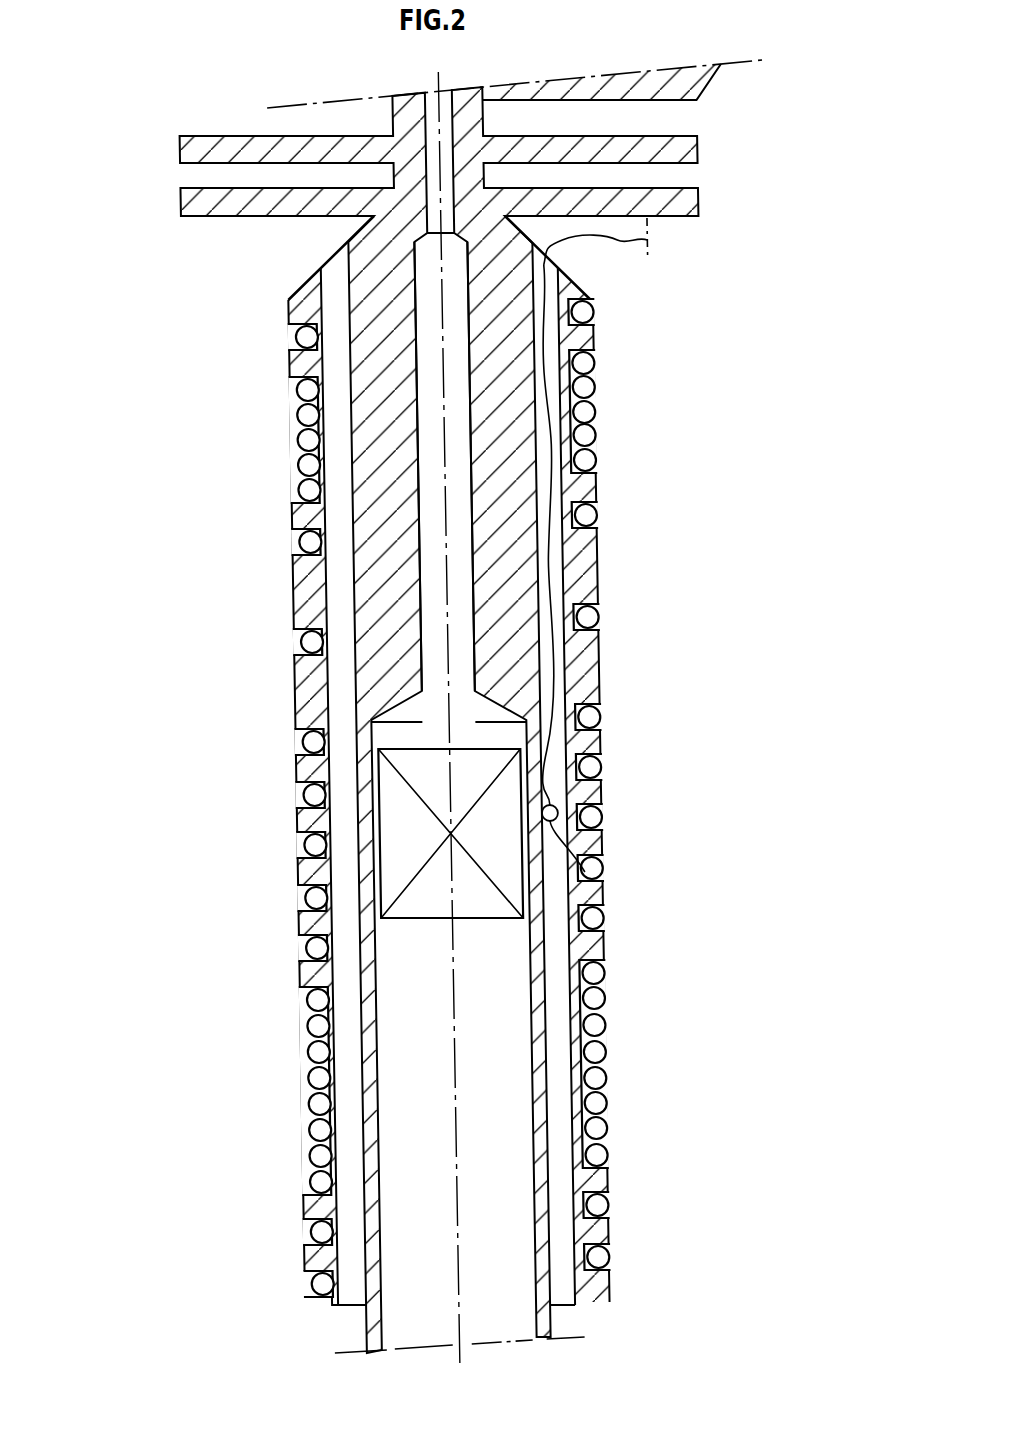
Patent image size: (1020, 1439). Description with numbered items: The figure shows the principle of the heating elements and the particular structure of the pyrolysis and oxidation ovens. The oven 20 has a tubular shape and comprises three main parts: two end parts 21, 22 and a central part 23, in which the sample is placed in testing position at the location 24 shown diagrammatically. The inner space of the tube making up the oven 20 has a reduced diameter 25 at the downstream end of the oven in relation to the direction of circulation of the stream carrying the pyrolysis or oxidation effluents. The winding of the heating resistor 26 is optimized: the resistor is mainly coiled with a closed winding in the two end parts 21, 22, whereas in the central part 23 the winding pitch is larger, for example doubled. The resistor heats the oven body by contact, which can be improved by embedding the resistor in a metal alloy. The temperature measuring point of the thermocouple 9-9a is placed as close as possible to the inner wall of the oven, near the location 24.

The oven 20 is at (164, 303).
The end part 21 is at (617, 290).
The end part 22 is at (625, 965).
The central part 23 is at (627, 685).
The sample location 24 is at (390, 833).
The reduced diameter 25 is at (429, 477).
The heating resistor 26 is at (298, 543).
The thermocouple 9-9a is at (565, 872).